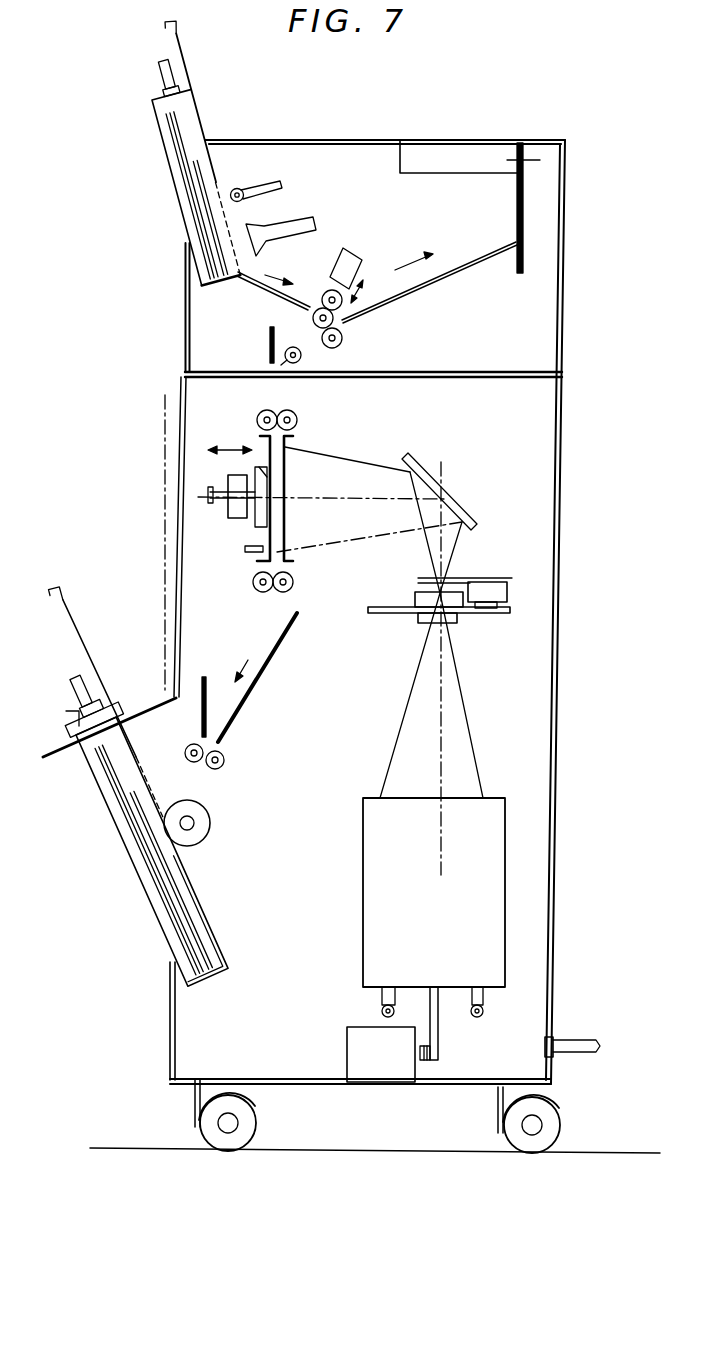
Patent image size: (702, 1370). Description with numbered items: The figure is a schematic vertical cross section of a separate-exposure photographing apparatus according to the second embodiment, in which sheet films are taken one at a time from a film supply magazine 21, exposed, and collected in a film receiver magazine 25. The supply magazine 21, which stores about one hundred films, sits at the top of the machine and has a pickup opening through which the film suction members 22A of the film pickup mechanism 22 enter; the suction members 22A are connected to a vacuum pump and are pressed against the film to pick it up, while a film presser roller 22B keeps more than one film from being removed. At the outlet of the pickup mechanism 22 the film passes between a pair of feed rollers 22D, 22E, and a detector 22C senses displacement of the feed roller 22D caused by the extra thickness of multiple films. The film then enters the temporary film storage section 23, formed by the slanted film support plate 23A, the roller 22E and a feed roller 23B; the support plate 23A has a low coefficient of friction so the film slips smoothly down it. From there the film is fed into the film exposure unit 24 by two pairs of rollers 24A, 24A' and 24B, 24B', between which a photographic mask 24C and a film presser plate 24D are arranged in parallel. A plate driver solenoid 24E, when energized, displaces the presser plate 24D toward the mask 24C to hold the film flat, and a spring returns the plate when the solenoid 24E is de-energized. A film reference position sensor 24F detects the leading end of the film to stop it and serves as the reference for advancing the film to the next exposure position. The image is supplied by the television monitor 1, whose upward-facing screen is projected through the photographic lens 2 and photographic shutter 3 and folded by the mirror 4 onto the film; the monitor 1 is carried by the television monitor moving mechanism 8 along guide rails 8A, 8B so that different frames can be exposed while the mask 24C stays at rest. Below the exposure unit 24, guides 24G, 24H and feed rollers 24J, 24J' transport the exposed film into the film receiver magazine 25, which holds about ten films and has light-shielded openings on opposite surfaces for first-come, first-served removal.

The television monitor 1 is at (490, 855).
The photographic lens 2 is at (455, 600).
The photographic shutter 3 is at (495, 590).
The mirror 4 is at (430, 482).
The television monitor moving mechanism 8 is at (455, 1052).
The guide rail 8A is at (382, 1010).
The guide rail 8B is at (484, 1011).
The film supply magazine 21 is at (168, 105).
The film pickup mechanism 22 is at (320, 238).
The film suction members 22A is at (262, 240).
The film presser roller 22B is at (237, 188).
The detector 22C is at (352, 260).
The feed roller 22D is at (328, 291).
The feed roller 22E is at (312, 318).
The temporary film storage section 23 is at (419, 289).
The slanted film support plate 23A is at (465, 262).
The feed roller 23B is at (345, 341).
The film exposure unit 24 is at (277, 577).
The roller 24A is at (248, 405).
The roller 24A' is at (315, 412).
The roller 24B is at (242, 593).
The roller 24B' is at (313, 575).
The photographic mask 24C is at (287, 486).
The film presser plate 24D is at (265, 468).
The plate driver solenoid 24E is at (228, 510).
The film reference position sensor 24F is at (250, 550).
The guide 24G is at (249, 705).
The guide 24H is at (203, 720).
The feed roller 24J is at (174, 758).
The feed roller 24J' is at (243, 761).
The film receiver magazine 25 is at (98, 740).